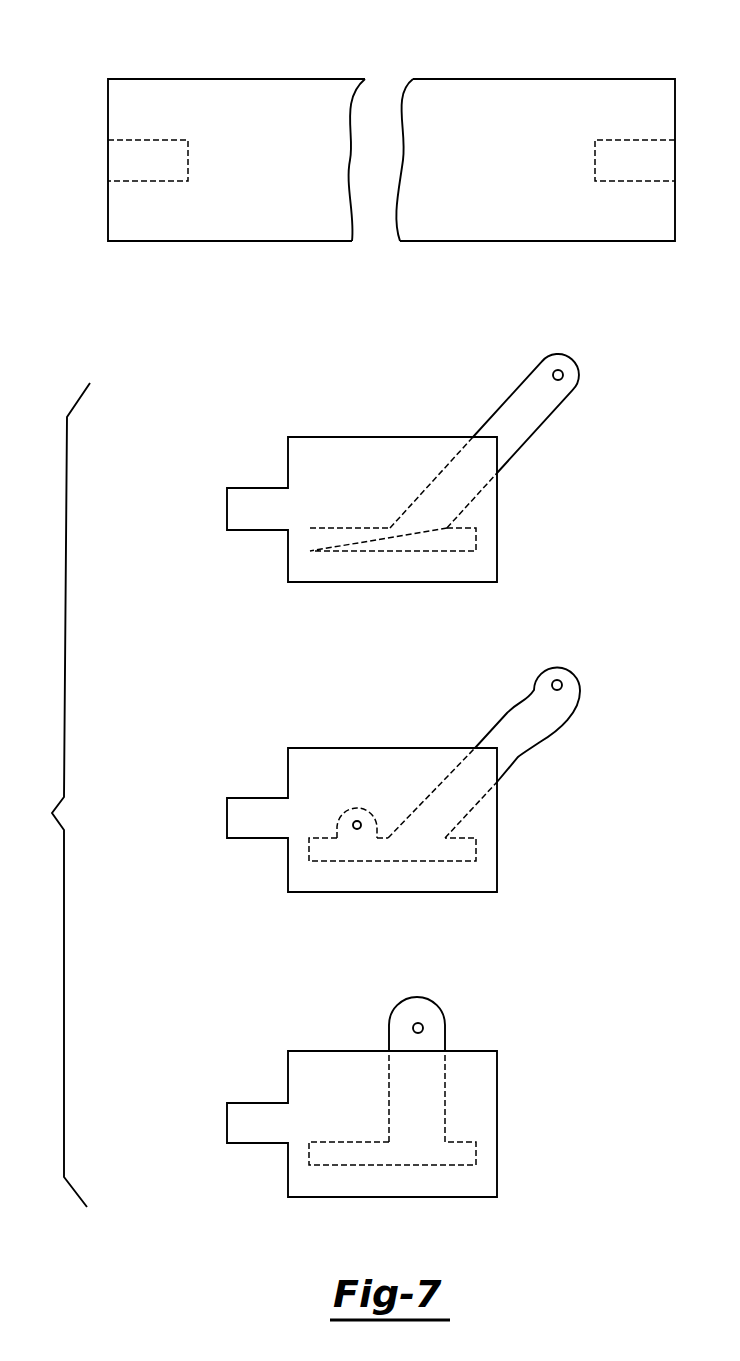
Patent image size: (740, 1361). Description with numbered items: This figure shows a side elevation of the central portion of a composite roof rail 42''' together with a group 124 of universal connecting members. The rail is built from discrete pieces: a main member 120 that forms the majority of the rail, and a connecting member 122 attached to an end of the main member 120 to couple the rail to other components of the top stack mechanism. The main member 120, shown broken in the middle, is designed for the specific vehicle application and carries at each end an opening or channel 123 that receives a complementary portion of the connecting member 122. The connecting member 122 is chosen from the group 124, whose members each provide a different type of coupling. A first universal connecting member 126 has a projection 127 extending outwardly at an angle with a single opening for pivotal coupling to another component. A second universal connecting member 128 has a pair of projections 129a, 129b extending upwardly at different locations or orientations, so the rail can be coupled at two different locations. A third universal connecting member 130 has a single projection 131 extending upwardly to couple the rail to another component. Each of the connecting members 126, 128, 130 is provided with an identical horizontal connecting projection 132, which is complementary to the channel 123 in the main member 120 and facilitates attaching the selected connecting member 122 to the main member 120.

The strip 42''' is at (391, 160).
The main member 120 is at (391, 160).
The channel 123 is at (190, 160).
The group of universal connecting members 124 is at (333, 780).
The connecting member 122 is at (396, 775).
The connecting projection 132 is at (396, 775).
The first universal connecting member 126 is at (421, 468).
The projection 127 is at (538, 414).
The second universal connecting member 128 is at (440, 779).
The projection 129a is at (553, 725).
The projection 129b is at (362, 817).
The third universal connecting member 130 is at (415, 1087).
The projection 131 is at (433, 1020).